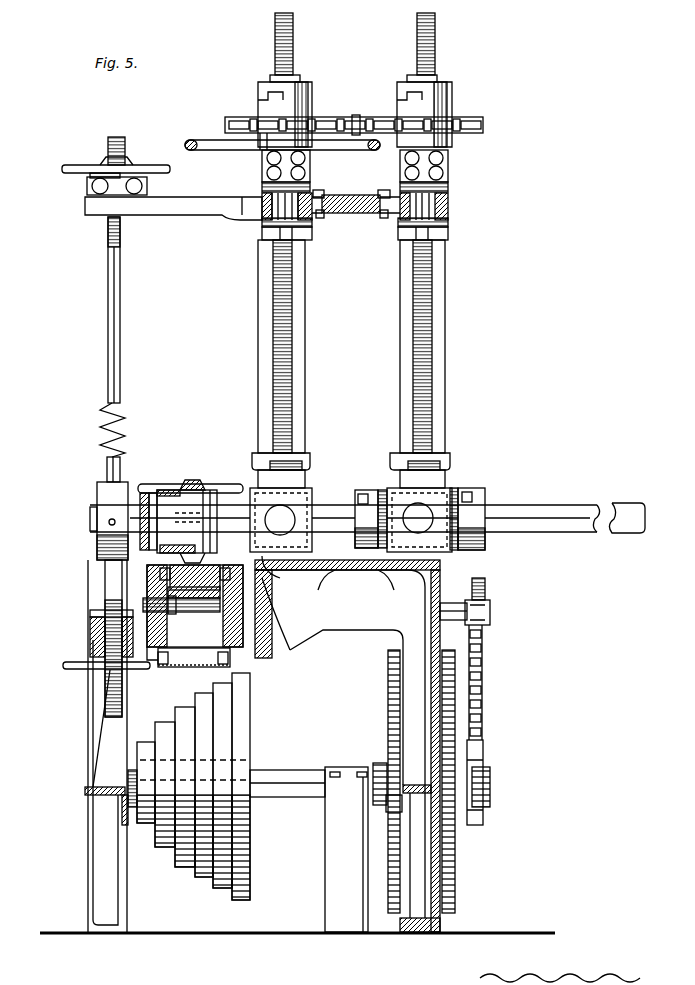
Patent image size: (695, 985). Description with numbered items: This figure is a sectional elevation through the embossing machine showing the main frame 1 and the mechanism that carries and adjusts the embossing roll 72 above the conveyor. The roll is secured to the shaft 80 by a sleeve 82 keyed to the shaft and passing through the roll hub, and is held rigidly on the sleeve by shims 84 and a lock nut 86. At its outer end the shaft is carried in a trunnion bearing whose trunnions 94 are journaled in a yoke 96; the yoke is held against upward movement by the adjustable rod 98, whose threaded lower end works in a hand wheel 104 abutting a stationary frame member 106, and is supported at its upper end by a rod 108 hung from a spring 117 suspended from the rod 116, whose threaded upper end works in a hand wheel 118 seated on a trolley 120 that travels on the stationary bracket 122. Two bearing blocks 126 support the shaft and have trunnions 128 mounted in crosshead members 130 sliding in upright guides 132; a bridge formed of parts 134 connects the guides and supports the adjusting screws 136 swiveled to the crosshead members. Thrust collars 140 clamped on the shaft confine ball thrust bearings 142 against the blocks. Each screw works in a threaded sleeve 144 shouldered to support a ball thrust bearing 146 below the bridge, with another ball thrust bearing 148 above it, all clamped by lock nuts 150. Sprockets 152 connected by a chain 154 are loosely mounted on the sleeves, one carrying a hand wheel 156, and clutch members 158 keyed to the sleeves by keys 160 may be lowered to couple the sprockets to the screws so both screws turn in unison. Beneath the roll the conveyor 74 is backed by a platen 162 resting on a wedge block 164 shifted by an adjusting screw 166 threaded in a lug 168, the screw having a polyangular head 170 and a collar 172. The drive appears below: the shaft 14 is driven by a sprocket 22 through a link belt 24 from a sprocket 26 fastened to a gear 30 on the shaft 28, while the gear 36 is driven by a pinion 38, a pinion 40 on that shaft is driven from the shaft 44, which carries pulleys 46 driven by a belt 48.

The main frame 1 is at (93, 702).
The shaft 14 is at (453, 603).
The sprocket 22 is at (487, 606).
The link belt 24 is at (482, 700).
The sprocket 26 is at (483, 815).
The shaft 28 is at (490, 787).
The gear 30 is at (455, 882).
The gear 36 is at (390, 890).
The pinion 38 is at (388, 806).
The pinion 40 is at (372, 790).
The shaft 44 is at (292, 797).
The pulleys 46 is at (215, 753).
The belt 48 is at (178, 712).
The embossing roll 72 is at (190, 480).
The belt conveyor 74 is at (225, 567).
The shaft 80 is at (90, 518).
The sleeve 82 is at (195, 505).
The shims 84 is at (162, 490).
The lock nut 86 is at (146, 490).
The trunnions 94 is at (110, 525).
The yoke 96 is at (100, 494).
The adjustable rod 98 is at (108, 580).
The hand wheel 104 is at (63, 665).
The stationary frame member 106 is at (147, 606).
The rod 108 is at (106, 466).
The rod 116 is at (118, 326).
The spring 117 is at (100, 421).
The hand wheel 118 is at (85, 166).
The trolley 120 is at (92, 184).
The stationary bracket 122 is at (100, 208).
The bearing blocks 126 is at (300, 492).
The trunnions 128 is at (285, 527).
The crosshead members 130 is at (385, 445).
The upright guides 132 is at (405, 338).
The bridge 134 is at (265, 206).
The adjusting screws 136 is at (412, 46).
The thrust collars 140 is at (359, 536).
The ball thrust bearings 142 is at (382, 489).
The sleeve 144 is at (301, 79).
The ball thrust bearing 146 is at (265, 232).
The ball thrust bearing 148 is at (262, 187).
The lock nuts 150 is at (400, 165).
The sprockets 152 is at (244, 118).
The chain 154 is at (377, 103).
The hand wheel 156 is at (190, 150).
The clutch members 158 is at (262, 90).
The keys 160 is at (446, 78).
The platen 162 is at (185, 578).
The wedge block 164 is at (272, 592).
The adjusting screw 166 is at (200, 612).
The lug 168 is at (194, 657).
The polyangular head 170 is at (118, 638).
The collar 172 is at (152, 662).